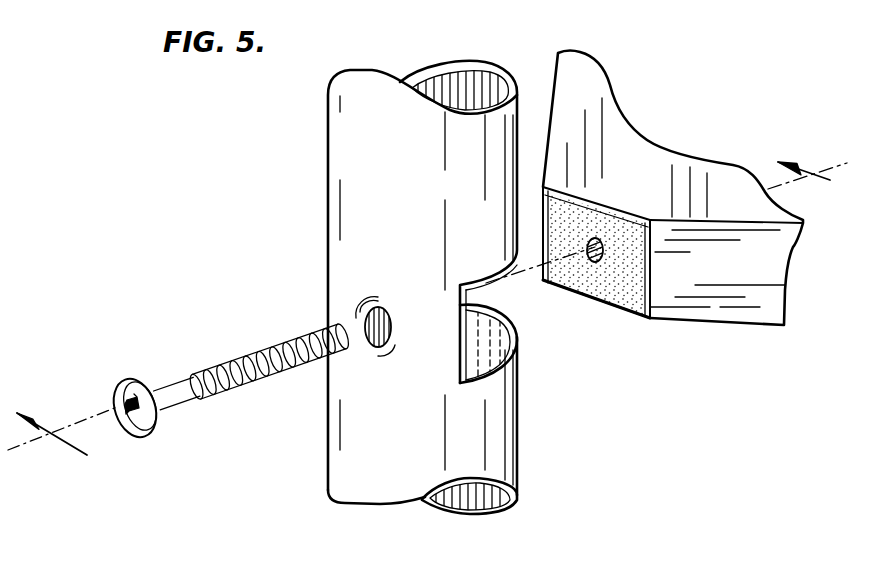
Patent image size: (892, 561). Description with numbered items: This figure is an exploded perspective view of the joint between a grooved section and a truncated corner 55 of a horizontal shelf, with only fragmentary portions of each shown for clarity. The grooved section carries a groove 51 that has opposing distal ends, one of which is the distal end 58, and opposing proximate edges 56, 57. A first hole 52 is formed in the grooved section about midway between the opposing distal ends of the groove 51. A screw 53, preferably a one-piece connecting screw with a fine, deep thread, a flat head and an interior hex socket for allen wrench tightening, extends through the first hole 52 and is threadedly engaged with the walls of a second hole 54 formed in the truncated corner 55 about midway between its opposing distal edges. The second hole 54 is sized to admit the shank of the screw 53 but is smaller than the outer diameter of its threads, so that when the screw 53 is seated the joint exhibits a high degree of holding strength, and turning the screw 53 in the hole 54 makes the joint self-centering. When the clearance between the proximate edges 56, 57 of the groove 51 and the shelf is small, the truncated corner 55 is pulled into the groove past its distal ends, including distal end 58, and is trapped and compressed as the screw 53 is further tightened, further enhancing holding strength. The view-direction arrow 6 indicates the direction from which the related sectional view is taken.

The groove 51 is at (490, 303).
The first hole 52 is at (378, 348).
The screw 53 is at (174, 382).
The second hole 54 is at (593, 265).
The truncated corner 55 is at (630, 318).
The proximate edge 56 is at (478, 280).
The proximate edge 57 is at (490, 397).
The distal end 58 is at (458, 347).
The view direction arrow 6 is at (62, 442).